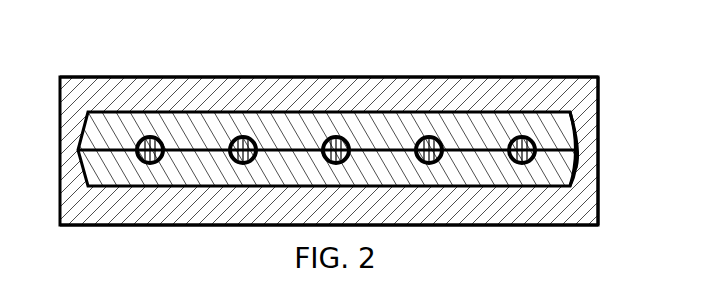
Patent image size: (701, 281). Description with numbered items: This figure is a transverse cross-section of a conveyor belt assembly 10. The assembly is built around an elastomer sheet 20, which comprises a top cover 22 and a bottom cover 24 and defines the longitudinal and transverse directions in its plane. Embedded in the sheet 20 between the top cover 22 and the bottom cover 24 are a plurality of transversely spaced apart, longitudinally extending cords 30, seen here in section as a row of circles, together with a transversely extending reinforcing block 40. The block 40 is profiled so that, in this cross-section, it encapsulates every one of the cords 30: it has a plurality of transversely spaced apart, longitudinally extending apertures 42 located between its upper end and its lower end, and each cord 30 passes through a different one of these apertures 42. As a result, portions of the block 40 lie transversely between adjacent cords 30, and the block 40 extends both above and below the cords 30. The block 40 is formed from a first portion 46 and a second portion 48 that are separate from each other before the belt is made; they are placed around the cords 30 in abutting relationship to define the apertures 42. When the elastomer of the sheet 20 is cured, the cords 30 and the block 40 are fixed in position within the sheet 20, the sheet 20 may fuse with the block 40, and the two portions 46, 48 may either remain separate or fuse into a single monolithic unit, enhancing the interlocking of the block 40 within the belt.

The conveyor belt assembly 10 is at (43, 63).
The elastomer sheet 20 is at (108, 77).
The top cover 22 is at (576, 77).
The bottom cover 24 is at (570, 227).
The cords 30 is at (242, 135).
The reinforcing block 40 is at (195, 112).
The apertures 42 is at (335, 135).
The first portion 46 is at (576, 125).
The second portion 48 is at (575, 165).